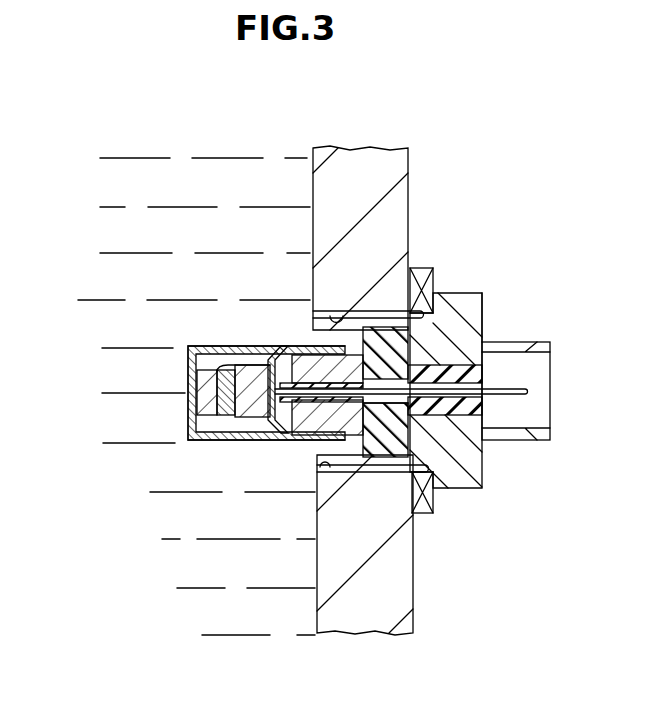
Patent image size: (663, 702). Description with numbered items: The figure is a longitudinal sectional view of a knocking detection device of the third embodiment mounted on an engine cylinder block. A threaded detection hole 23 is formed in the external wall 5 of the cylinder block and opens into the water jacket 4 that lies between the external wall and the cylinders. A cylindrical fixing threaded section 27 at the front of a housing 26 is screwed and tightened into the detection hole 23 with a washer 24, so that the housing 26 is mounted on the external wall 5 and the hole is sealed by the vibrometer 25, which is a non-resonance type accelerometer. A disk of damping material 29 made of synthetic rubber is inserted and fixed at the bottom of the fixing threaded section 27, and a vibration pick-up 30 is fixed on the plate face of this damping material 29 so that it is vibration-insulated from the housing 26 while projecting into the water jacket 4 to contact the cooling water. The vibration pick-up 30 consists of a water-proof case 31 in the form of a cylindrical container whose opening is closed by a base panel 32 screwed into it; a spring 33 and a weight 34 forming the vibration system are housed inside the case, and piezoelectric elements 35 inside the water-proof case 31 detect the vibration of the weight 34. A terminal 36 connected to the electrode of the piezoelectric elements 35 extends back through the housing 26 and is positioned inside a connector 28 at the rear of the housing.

The water jacket 4 is at (233, 249).
The external wall 5 is at (400, 170).
The threaded detection hole 23 is at (378, 326).
The washer 24 is at (437, 282).
The vibrometer 25 is at (508, 315).
The housing 26 is at (470, 305).
The fixing threaded section 27 is at (366, 319).
The connector 28 is at (537, 345).
The damping material 29 is at (407, 423).
The vibration pick-up 30 is at (172, 357).
The water-proof case 31 is at (187, 388).
The base panel 32 is at (300, 347).
The spring 33 is at (270, 443).
The weight 34 is at (250, 410).
The piezoelectric elements 35 is at (205, 408).
The terminal 36 is at (525, 390).